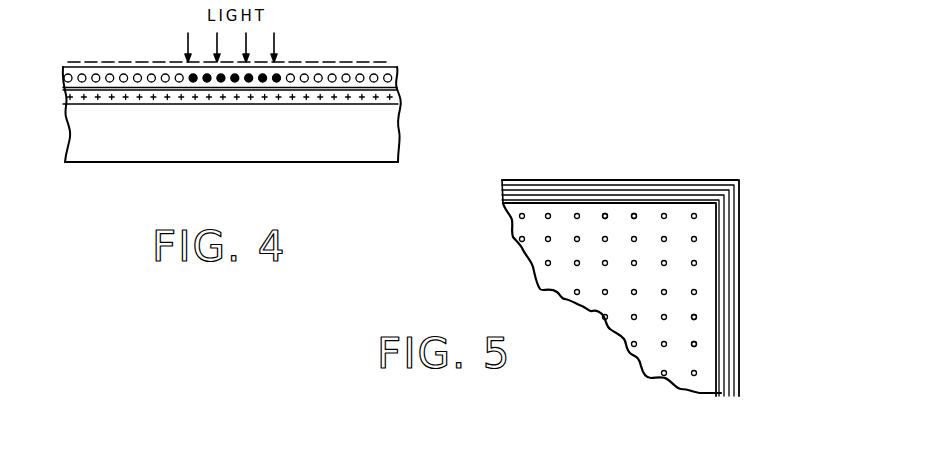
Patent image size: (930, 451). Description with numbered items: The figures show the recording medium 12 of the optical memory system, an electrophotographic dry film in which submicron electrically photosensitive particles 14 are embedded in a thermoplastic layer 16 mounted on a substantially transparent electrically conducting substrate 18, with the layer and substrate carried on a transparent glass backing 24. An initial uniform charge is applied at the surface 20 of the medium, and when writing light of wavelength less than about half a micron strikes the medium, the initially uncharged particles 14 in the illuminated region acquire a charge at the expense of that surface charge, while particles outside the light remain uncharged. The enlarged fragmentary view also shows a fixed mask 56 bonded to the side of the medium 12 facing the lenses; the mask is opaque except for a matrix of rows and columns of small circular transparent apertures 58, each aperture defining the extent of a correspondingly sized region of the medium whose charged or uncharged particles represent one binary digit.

In FIG. 4, the recording medium 12 is at (118, 177).
In FIG. 5, the recording medium 12 is at (497, 180).
In FIG. 4, the electrically photosensitive particles 14 is at (361, 73).
In FIG. 4, the thermoplastic layer 16 is at (397, 77).
In FIG. 5, the thermoplastic layer 16 is at (728, 250).
In FIG. 4, the electrically conducting substrate 18 is at (397, 97).
In FIG. 5, the electrically conducting substrate 18 is at (733, 215).
In FIG. 4, the surface 20 is at (108, 65).
In FIG. 4, the transparent glass backing 24 is at (338, 150).
In FIG. 5, the transparent glass backing 24 is at (742, 185).
In FIG. 5, the fixed mask 56 is at (721, 272).
In FIG. 5, the apertures 58 is at (635, 213).